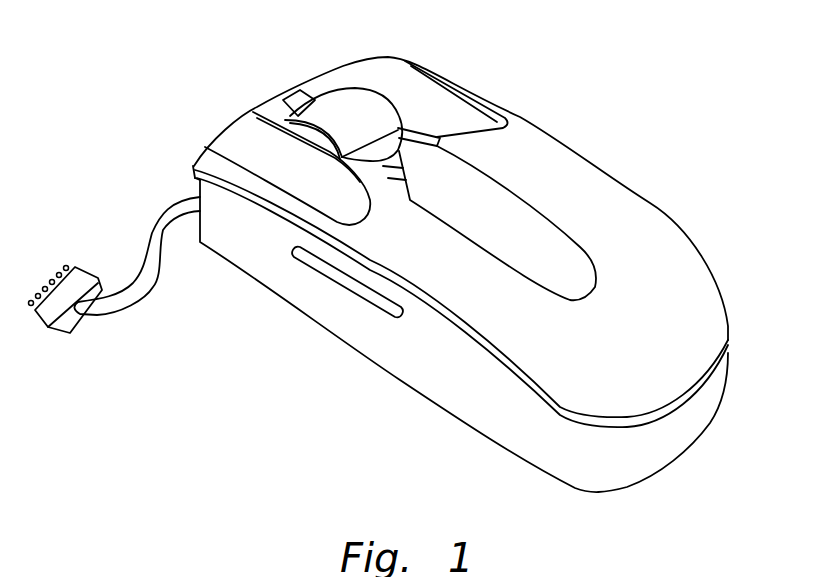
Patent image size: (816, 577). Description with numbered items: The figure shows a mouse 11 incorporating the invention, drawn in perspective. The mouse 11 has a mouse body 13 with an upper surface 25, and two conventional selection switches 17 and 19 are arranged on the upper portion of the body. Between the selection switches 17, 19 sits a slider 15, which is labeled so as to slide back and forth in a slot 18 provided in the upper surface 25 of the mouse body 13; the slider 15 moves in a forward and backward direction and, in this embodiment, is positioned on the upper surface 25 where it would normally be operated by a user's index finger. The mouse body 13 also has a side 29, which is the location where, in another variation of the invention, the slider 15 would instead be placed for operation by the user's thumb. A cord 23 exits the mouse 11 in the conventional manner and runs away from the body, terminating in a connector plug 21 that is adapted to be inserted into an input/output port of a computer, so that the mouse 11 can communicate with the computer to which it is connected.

The mouse 11 is at (650, 112).
The mouse body 13 is at (695, 437).
The slider 15 is at (377, 90).
The selection switch 17 is at (243, 143).
The slot 18 is at (303, 92).
The selection switch 19 is at (370, 76).
The connector plug 21 is at (47, 323).
The cord 23 is at (148, 273).
The upper surface 25 is at (658, 360).
The side 29 is at (330, 313).